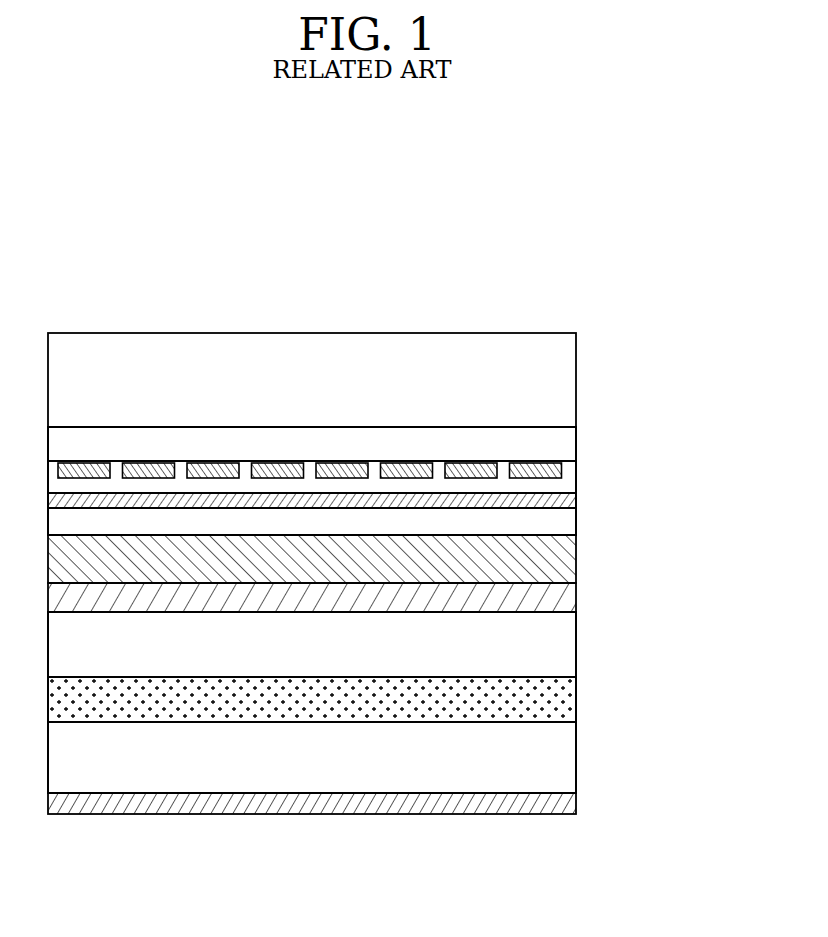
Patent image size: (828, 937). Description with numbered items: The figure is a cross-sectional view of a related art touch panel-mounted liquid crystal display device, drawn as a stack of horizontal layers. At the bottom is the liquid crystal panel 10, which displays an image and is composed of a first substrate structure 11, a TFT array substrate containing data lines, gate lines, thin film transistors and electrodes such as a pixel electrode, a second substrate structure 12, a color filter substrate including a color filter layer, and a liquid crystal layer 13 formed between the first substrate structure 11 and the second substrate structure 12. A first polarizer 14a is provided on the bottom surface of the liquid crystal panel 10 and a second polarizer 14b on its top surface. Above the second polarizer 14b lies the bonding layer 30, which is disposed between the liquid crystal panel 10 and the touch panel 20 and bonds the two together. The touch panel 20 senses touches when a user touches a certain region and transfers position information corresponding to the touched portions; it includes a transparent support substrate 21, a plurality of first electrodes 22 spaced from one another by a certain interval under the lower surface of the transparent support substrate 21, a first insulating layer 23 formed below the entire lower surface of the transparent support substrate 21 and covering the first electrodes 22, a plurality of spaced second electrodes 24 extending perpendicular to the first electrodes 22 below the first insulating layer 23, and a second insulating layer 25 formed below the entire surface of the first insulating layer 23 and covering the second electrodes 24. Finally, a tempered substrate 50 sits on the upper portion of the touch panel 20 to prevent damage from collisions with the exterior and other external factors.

The tempered substrate 50 is at (562, 380).
The touch panel 20 is at (665, 535).
The transparent support substrate 21 is at (562, 433).
The first electrodes 22 is at (562, 460).
The first insulating layer 23 is at (562, 484).
The second electrodes 24 is at (562, 504).
The second insulating layer 25 is at (562, 523).
The bonding layer 30 is at (562, 560).
The second polarizer 14b is at (562, 593).
The liquid crystal panel 10 is at (668, 625).
The second substrate structure 12 is at (562, 646).
The liquid crystal layer 13 is at (562, 708).
The first substrate structure 11 is at (562, 758).
The first polarizer 14a is at (562, 809).